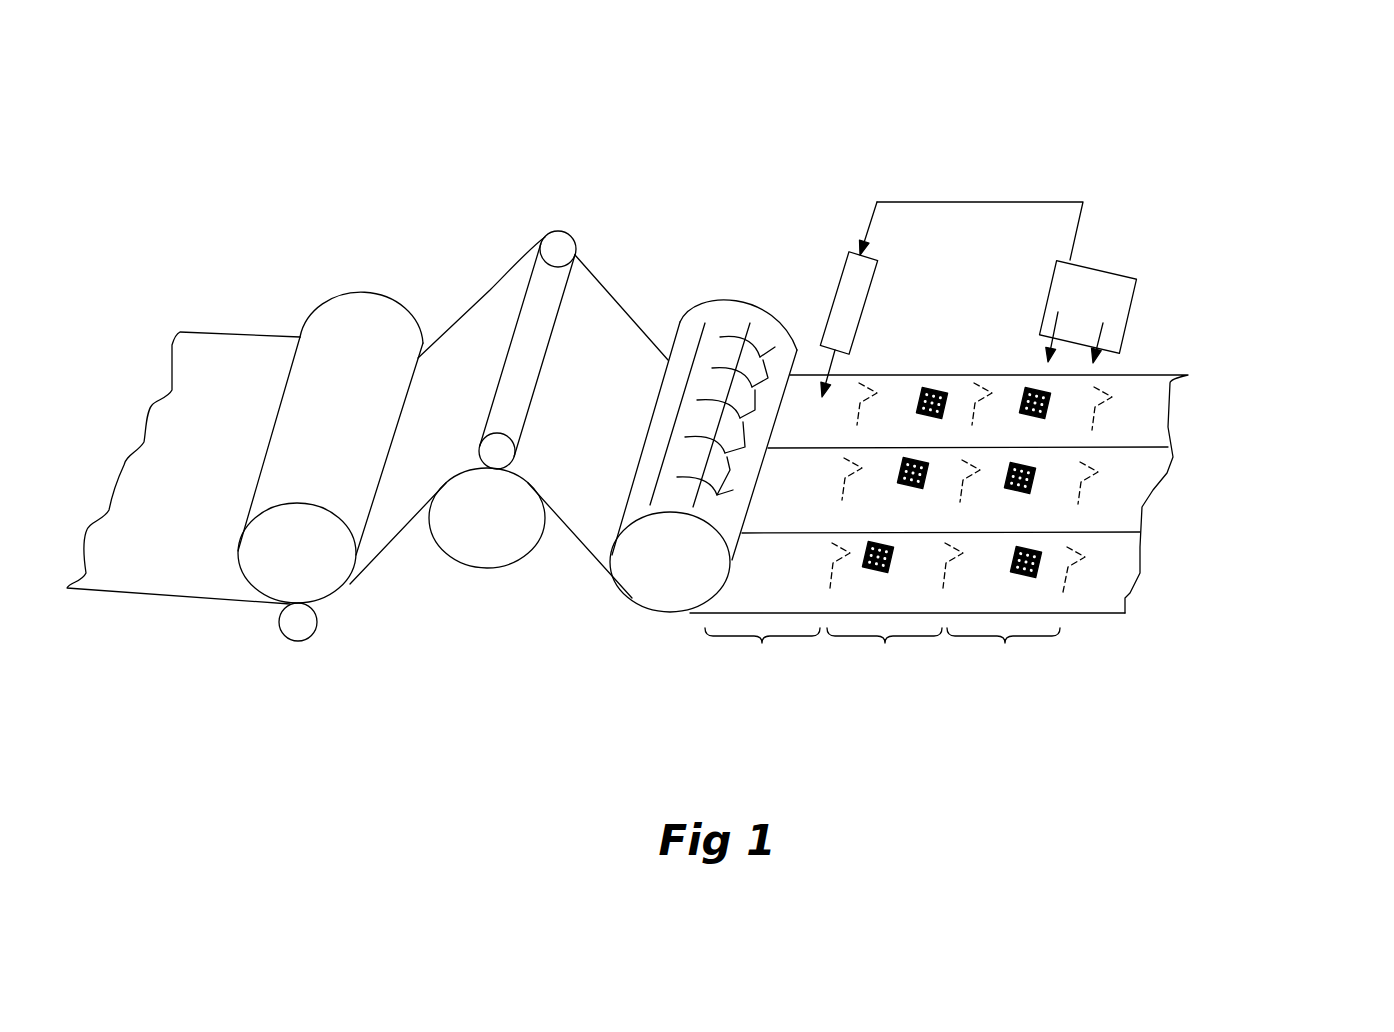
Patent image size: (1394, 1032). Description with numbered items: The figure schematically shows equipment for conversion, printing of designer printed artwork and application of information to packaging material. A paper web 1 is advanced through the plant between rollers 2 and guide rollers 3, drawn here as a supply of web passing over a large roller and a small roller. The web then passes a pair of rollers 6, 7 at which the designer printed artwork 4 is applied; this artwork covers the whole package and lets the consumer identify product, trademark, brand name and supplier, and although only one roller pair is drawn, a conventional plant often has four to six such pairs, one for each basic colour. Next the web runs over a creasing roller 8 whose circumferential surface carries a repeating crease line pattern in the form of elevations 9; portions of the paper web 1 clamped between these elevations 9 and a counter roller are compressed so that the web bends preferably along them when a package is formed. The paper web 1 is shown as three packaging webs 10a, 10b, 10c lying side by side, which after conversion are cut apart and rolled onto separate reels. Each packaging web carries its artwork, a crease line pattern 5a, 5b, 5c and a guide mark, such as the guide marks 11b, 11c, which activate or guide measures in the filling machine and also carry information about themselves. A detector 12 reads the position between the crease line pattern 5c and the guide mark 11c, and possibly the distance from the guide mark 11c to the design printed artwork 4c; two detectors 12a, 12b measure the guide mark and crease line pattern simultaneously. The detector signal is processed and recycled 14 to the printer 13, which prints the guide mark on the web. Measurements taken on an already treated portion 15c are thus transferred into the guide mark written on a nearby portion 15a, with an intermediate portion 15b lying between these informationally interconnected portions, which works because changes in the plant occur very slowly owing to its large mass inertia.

The paper web 1 is at (221, 356).
The roller 2 is at (298, 632).
The guide roller 3 is at (276, 576).
The designer printed artwork 4 is at (575, 512).
The roller 6 is at (444, 521).
The roller 7 is at (560, 256).
The creasing roller 8 is at (658, 582).
The elevations 9 is at (750, 323).
The detector 12 is at (1115, 298).
The detector 12a is at (1063, 317).
The detector 12b is at (1100, 332).
The printer 13 is at (843, 283).
The signal recycling 14 is at (960, 197).
The packaging web 10a is at (1306, 385).
The packaging web 10b is at (1306, 459).
The packaging web 10c is at (1306, 541).
The crease line pattern 5a is at (827, 572).
The crease line pattern 5b is at (945, 580).
The crease line pattern 5c is at (1083, 558).
The design printed artwork 4c is at (1030, 597).
The guide mark 11b is at (890, 567).
The guide mark 11c is at (1038, 568).
The portion 15a is at (762, 645).
The portion 15b is at (885, 645).
The portion 15c is at (1005, 645).